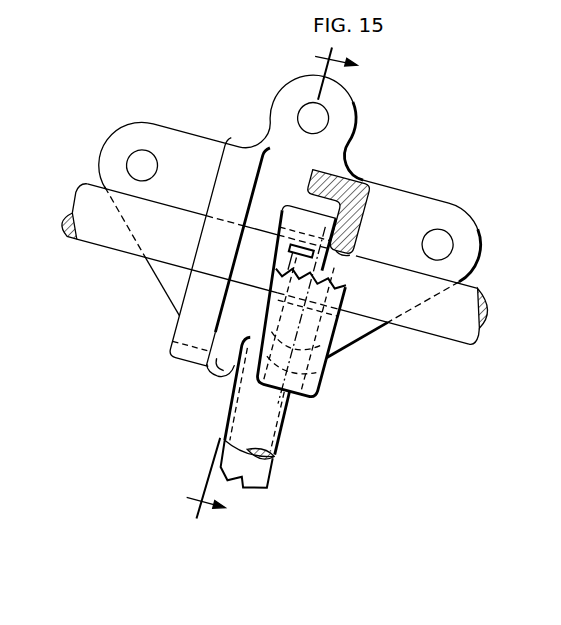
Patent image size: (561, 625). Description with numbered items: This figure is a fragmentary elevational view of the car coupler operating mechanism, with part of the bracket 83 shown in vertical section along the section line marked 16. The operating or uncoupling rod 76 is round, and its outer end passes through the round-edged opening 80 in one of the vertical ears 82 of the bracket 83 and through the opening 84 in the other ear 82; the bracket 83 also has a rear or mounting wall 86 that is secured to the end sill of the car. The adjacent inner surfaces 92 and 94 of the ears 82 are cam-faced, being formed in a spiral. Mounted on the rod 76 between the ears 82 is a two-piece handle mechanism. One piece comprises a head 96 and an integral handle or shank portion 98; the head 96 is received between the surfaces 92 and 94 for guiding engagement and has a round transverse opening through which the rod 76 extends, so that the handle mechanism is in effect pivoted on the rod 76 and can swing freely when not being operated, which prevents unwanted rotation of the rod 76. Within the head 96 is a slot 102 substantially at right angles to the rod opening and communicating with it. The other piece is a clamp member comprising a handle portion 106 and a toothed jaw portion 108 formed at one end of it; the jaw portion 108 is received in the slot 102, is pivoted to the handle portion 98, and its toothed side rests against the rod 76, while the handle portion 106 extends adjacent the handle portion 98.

The section line 16- 16 is at (284, 284).
The operating rod 76 is at (276, 263).
The round-edged opening 80 is at (356, 257).
The vertical ears 82 is at (386, 189).
The bracket 83 is at (484, 229).
The opening 84 is at (252, 177).
The mounting wall 86 is at (313, 131).
The inner surface 92 is at (313, 392).
The inner surface 94 is at (215, 372).
The head 96 is at (303, 237).
The handle portion 98 is at (259, 399).
The slot 102 is at (297, 249).
The handle portion 106 is at (245, 466).
The jaw portion 108 is at (297, 265).